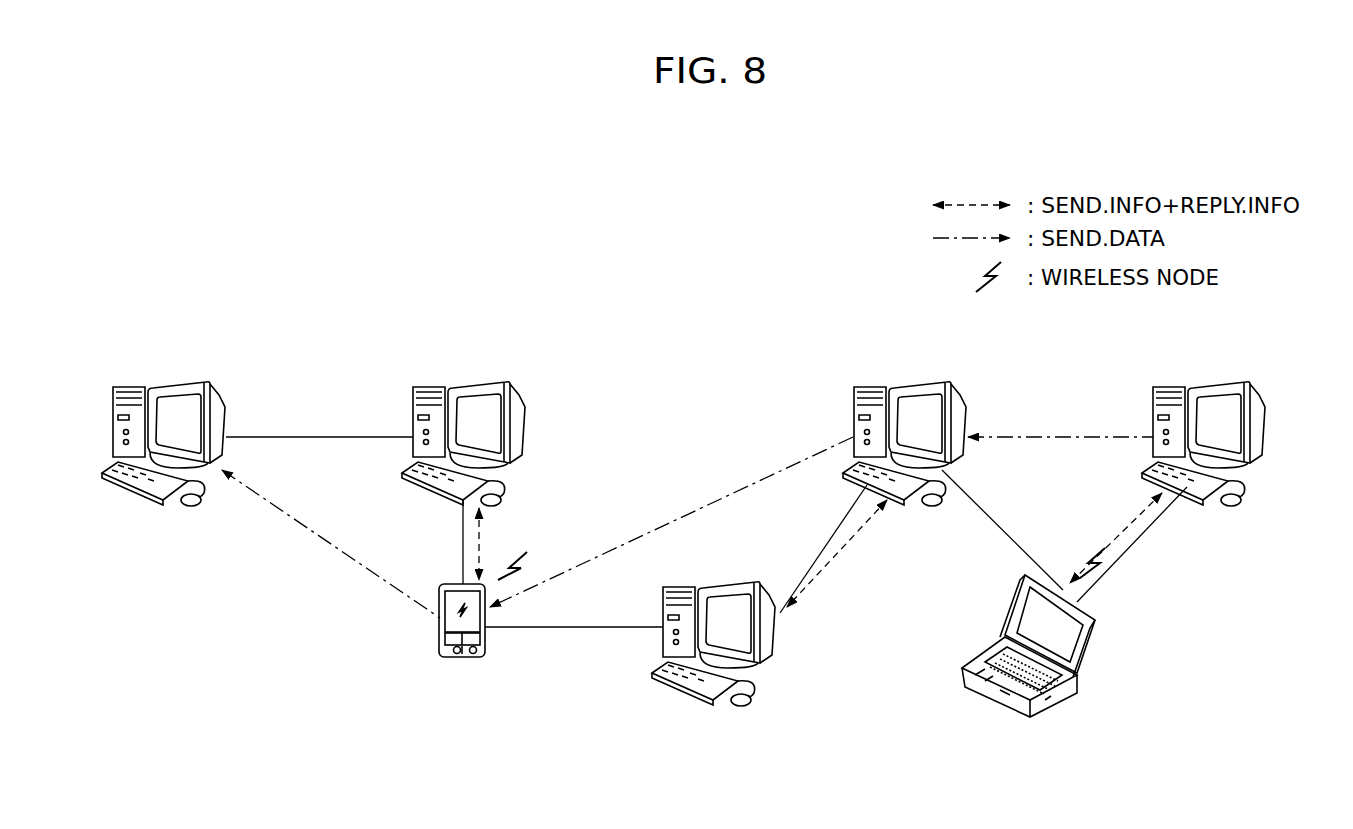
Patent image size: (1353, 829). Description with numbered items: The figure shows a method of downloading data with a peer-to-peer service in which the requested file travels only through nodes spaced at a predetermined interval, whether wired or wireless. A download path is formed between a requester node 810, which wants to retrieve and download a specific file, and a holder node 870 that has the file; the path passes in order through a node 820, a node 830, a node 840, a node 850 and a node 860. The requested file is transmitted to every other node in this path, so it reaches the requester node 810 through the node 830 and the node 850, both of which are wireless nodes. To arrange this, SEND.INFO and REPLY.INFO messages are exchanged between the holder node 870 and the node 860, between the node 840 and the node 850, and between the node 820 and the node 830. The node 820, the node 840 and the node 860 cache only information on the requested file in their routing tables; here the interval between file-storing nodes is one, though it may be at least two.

The requester node 810 is at (186, 383).
The node 820 is at (486, 383).
The node 830 is at (465, 660).
The node 840 is at (736, 582).
The node 850 is at (928, 383).
The node 860 is at (1012, 607).
The holder node 870 is at (1226, 383).